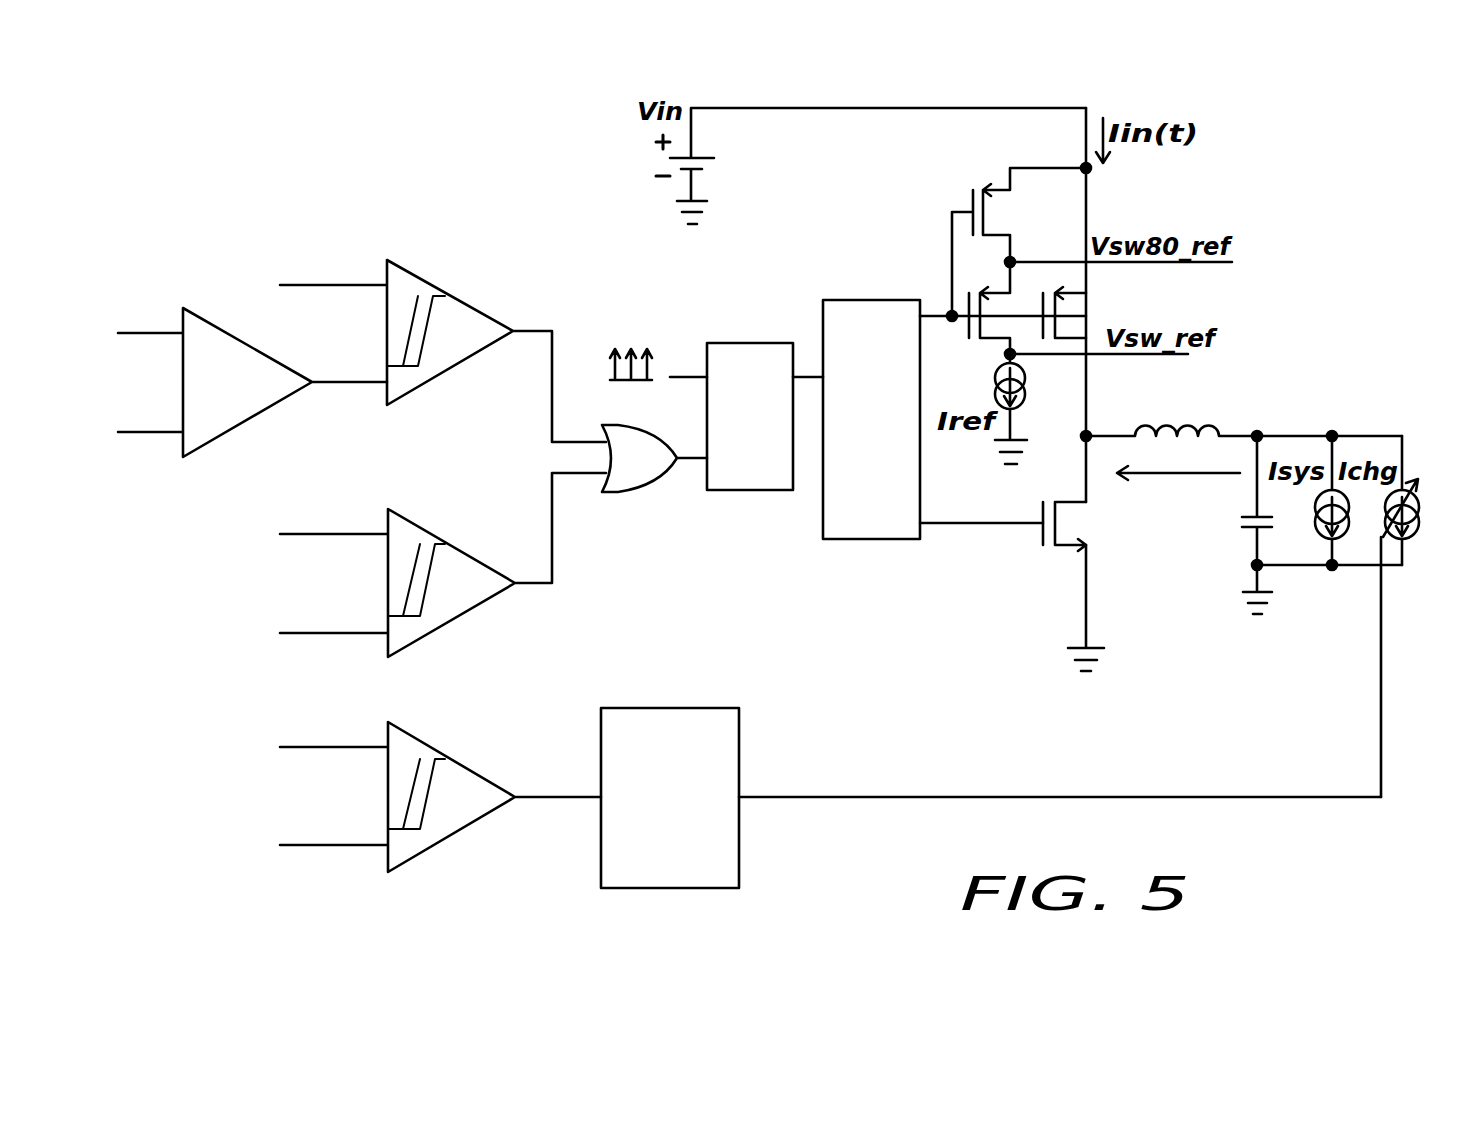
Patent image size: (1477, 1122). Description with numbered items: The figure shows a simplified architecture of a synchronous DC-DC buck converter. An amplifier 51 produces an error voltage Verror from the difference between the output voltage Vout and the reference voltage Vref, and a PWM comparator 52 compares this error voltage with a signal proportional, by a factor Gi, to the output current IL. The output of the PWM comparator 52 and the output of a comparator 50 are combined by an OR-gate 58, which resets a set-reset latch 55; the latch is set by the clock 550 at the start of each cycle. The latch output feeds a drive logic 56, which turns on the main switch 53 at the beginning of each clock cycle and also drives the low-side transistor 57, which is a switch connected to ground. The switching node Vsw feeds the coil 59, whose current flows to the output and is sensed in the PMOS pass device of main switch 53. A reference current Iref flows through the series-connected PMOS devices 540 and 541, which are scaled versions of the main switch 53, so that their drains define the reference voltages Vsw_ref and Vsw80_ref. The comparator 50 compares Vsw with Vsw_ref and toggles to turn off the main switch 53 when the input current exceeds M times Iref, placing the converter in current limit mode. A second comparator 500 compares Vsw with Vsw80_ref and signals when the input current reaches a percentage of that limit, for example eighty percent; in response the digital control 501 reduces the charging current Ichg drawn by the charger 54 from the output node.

The comparator 50 is at (437, 535).
The amplifier 51 is at (242, 418).
The PWM comparator 52 is at (435, 284).
The main switch 53 is at (1088, 305).
The charger 54 is at (1417, 512).
The set-reset latch 55 is at (750, 490).
The drive logic 56 is at (878, 539).
The transistor 57 is at (1035, 543).
The OR-gate 58 is at (636, 492).
The coil 59 is at (1163, 422).
The comparator 500 is at (437, 745).
The digital control 501 is at (740, 735).
The PMOS device 540 is at (962, 332).
The PMOS device 541 is at (973, 188).
The clock 550 is at (648, 330).